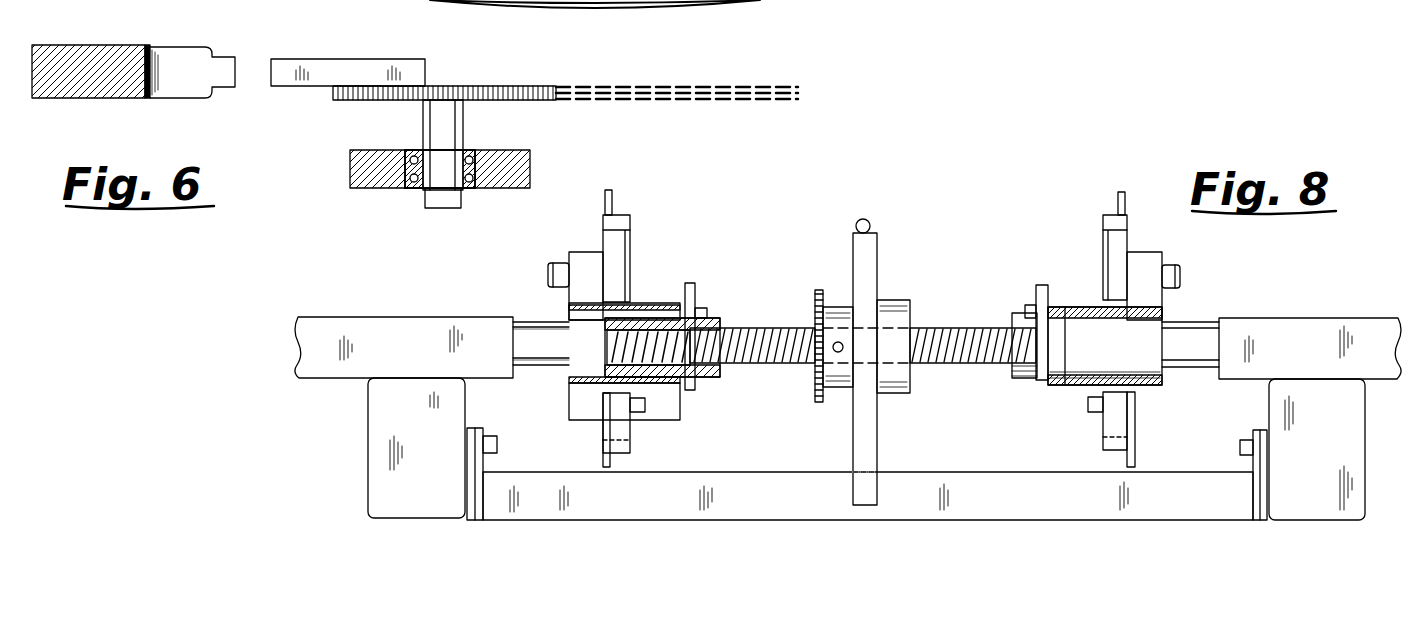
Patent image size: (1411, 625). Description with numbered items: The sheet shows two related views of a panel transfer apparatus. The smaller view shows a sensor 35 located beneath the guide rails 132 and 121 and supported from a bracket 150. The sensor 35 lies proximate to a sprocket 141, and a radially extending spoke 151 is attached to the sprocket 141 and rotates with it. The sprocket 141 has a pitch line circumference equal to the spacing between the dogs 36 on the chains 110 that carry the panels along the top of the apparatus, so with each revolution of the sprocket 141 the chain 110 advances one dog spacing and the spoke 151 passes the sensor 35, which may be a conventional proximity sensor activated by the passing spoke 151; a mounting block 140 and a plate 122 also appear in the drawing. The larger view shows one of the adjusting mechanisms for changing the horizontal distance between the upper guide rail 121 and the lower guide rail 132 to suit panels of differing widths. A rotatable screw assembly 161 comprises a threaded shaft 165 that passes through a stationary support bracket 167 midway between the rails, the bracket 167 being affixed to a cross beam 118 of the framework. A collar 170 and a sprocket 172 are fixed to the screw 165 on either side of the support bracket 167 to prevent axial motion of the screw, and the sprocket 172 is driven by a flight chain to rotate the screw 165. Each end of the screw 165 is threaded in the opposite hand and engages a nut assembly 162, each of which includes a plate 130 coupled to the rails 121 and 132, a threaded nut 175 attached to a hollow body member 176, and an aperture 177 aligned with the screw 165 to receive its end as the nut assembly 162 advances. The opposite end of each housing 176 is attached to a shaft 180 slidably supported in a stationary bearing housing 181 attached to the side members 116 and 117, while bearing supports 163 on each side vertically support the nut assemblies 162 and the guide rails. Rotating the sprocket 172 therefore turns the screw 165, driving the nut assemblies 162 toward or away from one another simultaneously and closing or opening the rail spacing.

In FIG. 6, the sensor 35 is at (178, 55).
In FIG. 8, the dogs 36 is at (612, 196).
In FIG. 6, the chains 110 is at (648, 86).
In FIG. 8, the chains 110 is at (612, 213).
In FIG. 8, the side member 116 is at (383, 423).
In FIG. 8, the side member 117 is at (1345, 445).
In FIG. 6, the cross beam 118 is at (1128, 0).
In FIG. 8, the cross beam 118 is at (738, 482).
In FIG. 8, the upper guide rail 121 is at (622, 265).
In FIG. 8, the center plate 122 is at (868, 218).
In FIG. 8, the plate 130 is at (583, 255).
In FIG. 8, the lower guide rail 132 is at (600, 432).
In FIG. 6, the bearing block 140 is at (355, 168).
In FIG. 6, the sprocket 141 is at (355, 100).
In FIG. 6, the bracket 150 is at (100, 48).
In FIG. 6, the spoke 151 is at (305, 70).
In FIG. 8, the screw assembly 161 is at (808, 375).
In FIG. 8, the nut assembly 162 is at (672, 395).
In FIG. 8, the bearing support 163 is at (493, 382).
In FIG. 8, the threaded shaft 165 is at (735, 330).
In FIG. 8, the support bracket 167 is at (860, 432).
In FIG. 8, the collar 170 is at (895, 300).
In FIG. 8, the sprocket 172 is at (823, 290).
In FIG. 8, the nut 175 is at (700, 375).
In FIG. 8, the hollow body member 176 is at (640, 310).
In FIG. 8, the aperture 177 is at (668, 330).
In FIG. 8, the shaft 180 is at (538, 330).
In FIG. 8, the bearing housing 181 is at (420, 327).